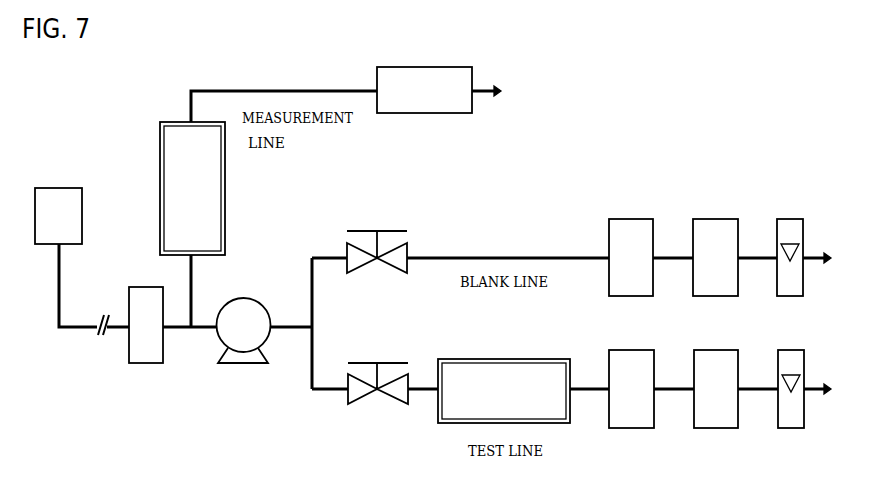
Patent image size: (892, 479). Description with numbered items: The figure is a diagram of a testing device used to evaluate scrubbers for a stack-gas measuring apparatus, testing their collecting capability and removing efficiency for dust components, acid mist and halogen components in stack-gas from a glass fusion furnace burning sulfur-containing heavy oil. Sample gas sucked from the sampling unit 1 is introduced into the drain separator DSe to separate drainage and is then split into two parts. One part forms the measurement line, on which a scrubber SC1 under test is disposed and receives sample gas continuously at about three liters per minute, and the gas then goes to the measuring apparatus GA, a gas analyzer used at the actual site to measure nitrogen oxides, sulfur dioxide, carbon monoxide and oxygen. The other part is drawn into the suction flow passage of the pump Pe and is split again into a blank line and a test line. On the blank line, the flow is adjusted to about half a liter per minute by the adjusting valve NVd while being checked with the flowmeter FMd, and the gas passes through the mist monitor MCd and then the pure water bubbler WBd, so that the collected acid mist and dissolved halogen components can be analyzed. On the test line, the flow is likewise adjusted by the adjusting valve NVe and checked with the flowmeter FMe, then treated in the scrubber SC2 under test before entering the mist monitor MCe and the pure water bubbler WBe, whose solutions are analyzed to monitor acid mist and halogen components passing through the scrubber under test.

The sampling unit 1 is at (82, 214).
The scrubber under test SC1 is at (225, 185).
The measuring apparatus GA is at (422, 113).
The drain separator DSe is at (148, 363).
The pump Pe is at (243, 363).
The adjusting valve NVd is at (390, 229).
The adjusting valve NVe is at (393, 360).
The scrubber under test SC2 is at (520, 342).
The mist monitor MCd is at (647, 201).
The pure water bubbler WBd is at (732, 201).
The flowmeter FMd is at (803, 203).
The mist monitor MCe is at (647, 332).
The pure water bubbler WBe is at (732, 332).
The flowmeter FMe is at (804, 334).